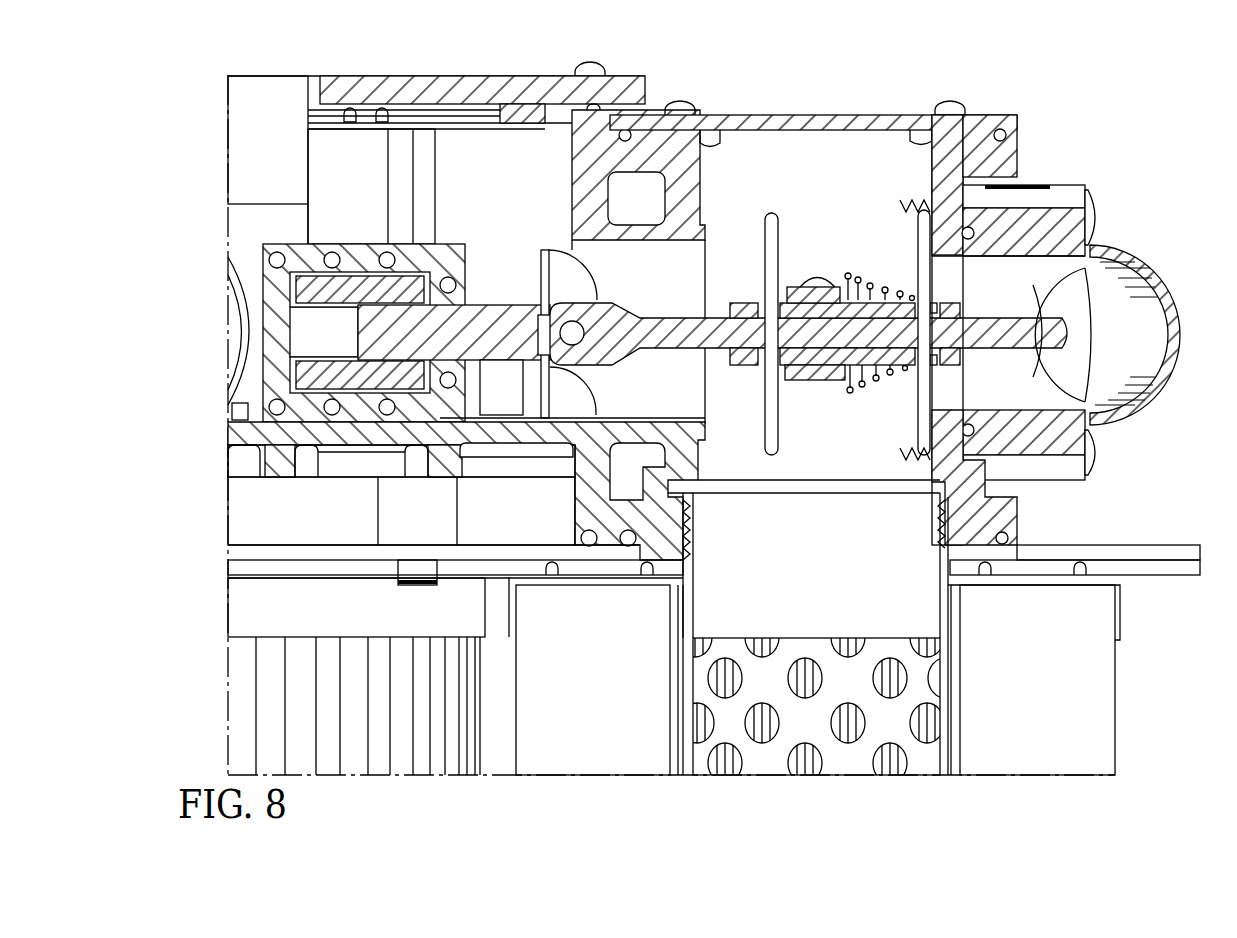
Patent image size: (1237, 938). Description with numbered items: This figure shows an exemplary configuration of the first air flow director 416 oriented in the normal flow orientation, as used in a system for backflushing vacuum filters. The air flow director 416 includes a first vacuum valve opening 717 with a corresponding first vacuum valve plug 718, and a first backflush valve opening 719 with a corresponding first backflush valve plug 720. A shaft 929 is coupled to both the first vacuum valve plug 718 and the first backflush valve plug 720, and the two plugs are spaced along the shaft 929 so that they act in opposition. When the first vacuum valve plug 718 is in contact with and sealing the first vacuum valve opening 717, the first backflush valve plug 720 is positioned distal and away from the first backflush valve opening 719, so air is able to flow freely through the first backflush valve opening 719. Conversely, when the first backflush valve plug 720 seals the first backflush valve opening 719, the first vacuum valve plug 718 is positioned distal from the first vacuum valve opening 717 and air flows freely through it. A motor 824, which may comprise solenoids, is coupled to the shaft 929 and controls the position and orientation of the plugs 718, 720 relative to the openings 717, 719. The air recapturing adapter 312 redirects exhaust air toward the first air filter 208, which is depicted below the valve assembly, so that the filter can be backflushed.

The motor 824 is at (313, 287).
The first vacuum valve opening 717 is at (680, 257).
The first vacuum valve plug 718 is at (770, 213).
The shaft 929 is at (815, 320).
The first air flow director 416 is at (858, 113).
The first backflush valve opening 719 is at (1003, 287).
The air recapturing adapter 312 is at (1108, 307).
The first backflush valve plug 720 is at (927, 437).
The first air filter 208 is at (890, 768).